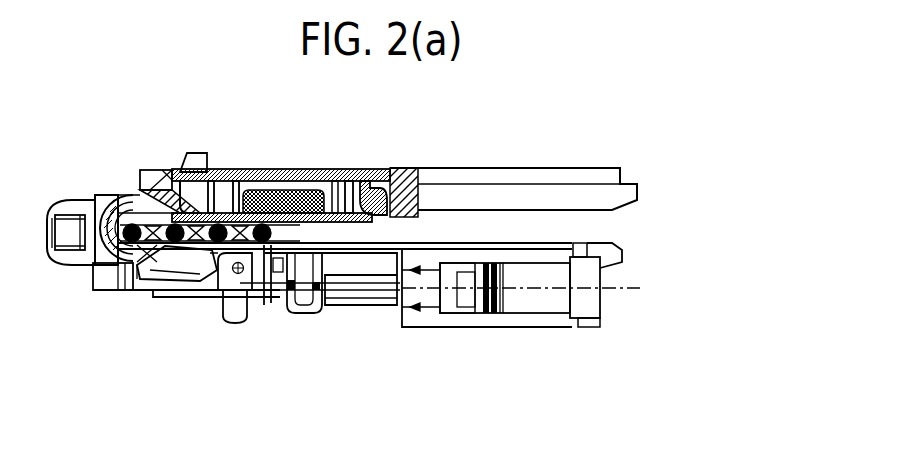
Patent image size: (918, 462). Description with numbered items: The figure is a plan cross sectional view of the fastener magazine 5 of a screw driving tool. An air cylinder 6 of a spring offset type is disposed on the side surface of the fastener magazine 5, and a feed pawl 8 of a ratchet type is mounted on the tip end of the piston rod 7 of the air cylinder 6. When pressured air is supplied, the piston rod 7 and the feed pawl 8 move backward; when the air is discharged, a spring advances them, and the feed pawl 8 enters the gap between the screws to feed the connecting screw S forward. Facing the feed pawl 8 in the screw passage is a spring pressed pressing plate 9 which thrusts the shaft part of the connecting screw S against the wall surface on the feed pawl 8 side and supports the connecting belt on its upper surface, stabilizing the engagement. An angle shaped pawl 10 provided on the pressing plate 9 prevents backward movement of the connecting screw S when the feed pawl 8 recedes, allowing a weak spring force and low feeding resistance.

The fastener magazine 5 is at (543, 158).
The air cylinder 6 is at (500, 320).
The piston rod 7 is at (360, 306).
The feed pawl 8 is at (165, 270).
The pressing plate 9 is at (335, 172).
The pawl 10 is at (277, 225).
The connecting screw S is at (271, 290).